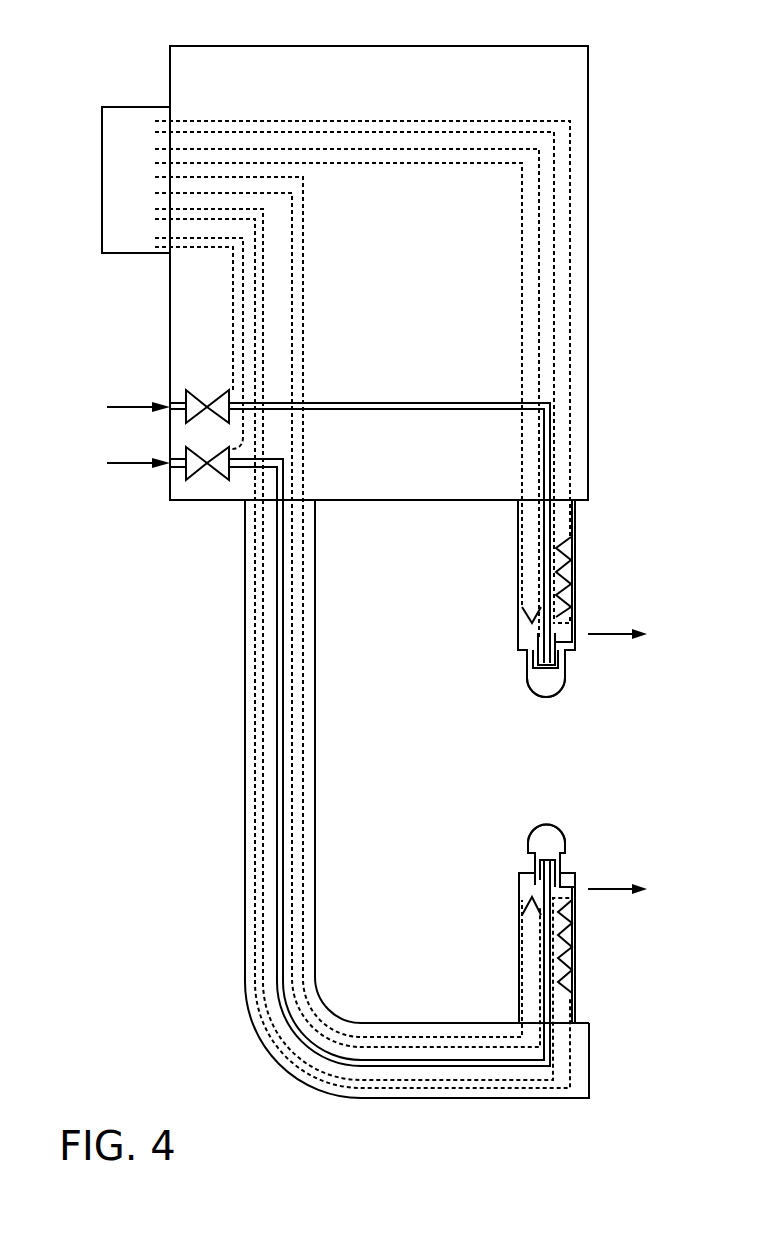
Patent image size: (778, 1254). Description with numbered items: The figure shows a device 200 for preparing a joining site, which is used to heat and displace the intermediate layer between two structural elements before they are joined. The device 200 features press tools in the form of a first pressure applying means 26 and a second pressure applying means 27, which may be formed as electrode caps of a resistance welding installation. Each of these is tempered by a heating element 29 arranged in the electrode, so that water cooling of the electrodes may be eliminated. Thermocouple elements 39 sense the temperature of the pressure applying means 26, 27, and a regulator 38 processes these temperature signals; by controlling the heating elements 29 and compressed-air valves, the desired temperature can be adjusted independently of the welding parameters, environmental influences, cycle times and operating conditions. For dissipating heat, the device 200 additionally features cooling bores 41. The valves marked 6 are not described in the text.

The device for preparing a joining site 200 is at (141, 871).
The regulator 38 is at (119, 139).
The valve 6 is at (192, 403).
The cooling bore 41 is at (546, 526).
The heating element 29 is at (570, 584).
The thermocouple element 39 is at (529, 611).
The second pressure applying means 27 is at (544, 687).
The first pressure applying means 26 is at (544, 842).